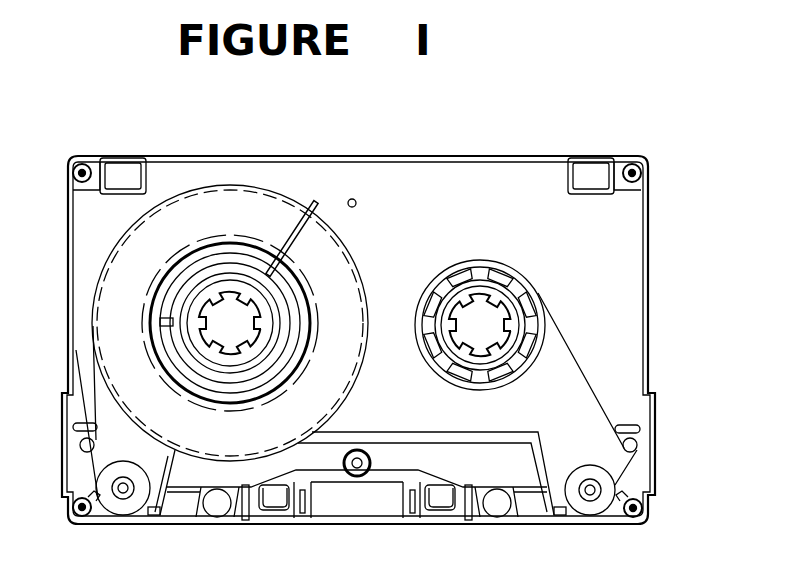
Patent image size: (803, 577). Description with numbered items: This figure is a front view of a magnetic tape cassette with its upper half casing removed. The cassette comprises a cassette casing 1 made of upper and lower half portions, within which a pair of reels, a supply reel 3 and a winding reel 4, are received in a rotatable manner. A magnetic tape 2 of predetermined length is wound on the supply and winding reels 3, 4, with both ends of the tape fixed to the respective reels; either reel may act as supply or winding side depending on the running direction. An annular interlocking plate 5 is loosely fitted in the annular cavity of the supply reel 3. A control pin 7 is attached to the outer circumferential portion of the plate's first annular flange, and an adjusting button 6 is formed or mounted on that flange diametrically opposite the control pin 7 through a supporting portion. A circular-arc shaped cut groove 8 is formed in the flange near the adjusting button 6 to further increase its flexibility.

The cassette casing 1 is at (622, 228).
The magnetic tape 2 is at (98, 293).
The supply reel 3 is at (318, 300).
The winding reel 4 is at (507, 269).
The annular interlocking plate 5 is at (272, 320).
The adjusting button 6 is at (160, 322).
The control pin 7 is at (306, 202).
The circular-arc shaped cut groove 8 is at (232, 268).